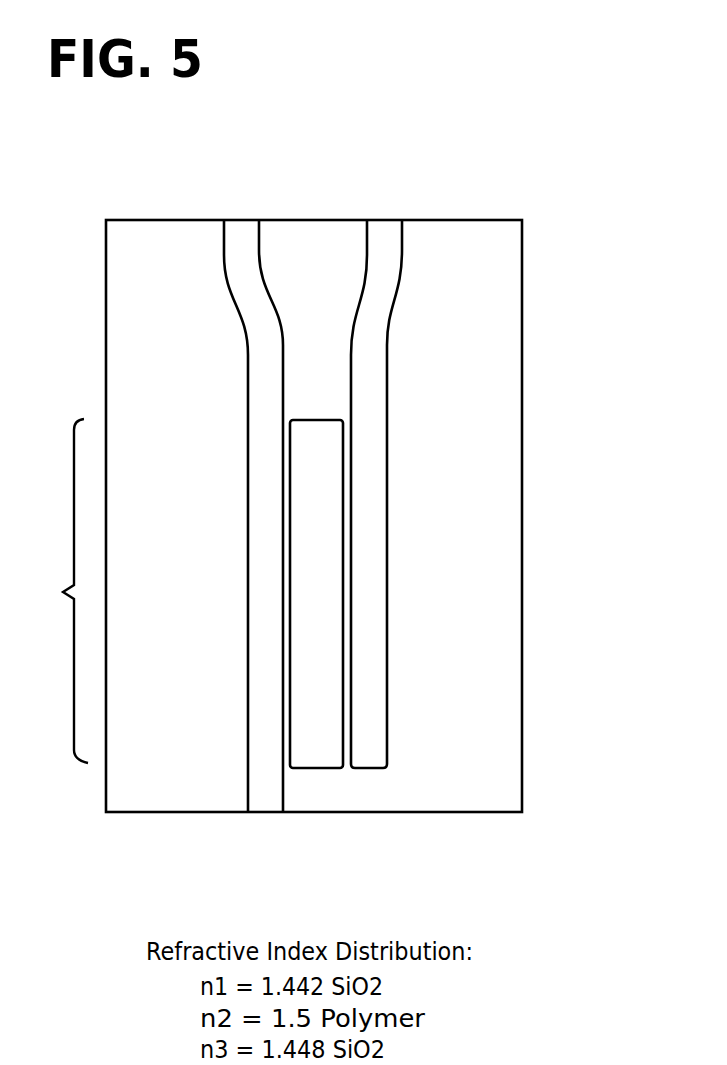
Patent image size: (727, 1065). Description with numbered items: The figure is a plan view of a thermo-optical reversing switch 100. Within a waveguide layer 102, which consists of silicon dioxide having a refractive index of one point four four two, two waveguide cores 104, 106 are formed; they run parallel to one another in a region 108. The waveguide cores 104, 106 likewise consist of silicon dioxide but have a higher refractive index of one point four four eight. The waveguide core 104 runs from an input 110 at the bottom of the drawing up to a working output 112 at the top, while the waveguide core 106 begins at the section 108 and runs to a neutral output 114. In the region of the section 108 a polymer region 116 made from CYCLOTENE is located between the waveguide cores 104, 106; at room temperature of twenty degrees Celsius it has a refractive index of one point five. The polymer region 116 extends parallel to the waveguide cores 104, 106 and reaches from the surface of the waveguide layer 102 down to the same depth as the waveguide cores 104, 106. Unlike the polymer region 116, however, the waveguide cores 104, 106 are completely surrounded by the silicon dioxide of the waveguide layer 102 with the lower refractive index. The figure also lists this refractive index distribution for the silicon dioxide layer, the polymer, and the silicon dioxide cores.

The thermo-optical reversing switch 100 is at (552, 303).
The waveguide layer 102 is at (329, 360).
The waveguide core 104 is at (247, 580).
The waveguide core 106 is at (388, 598).
The region 108 is at (53, 591).
The input 110 is at (267, 814).
The working output 112 is at (240, 218).
The neutral output 114 is at (387, 218).
The polymer region 116 is at (312, 418).